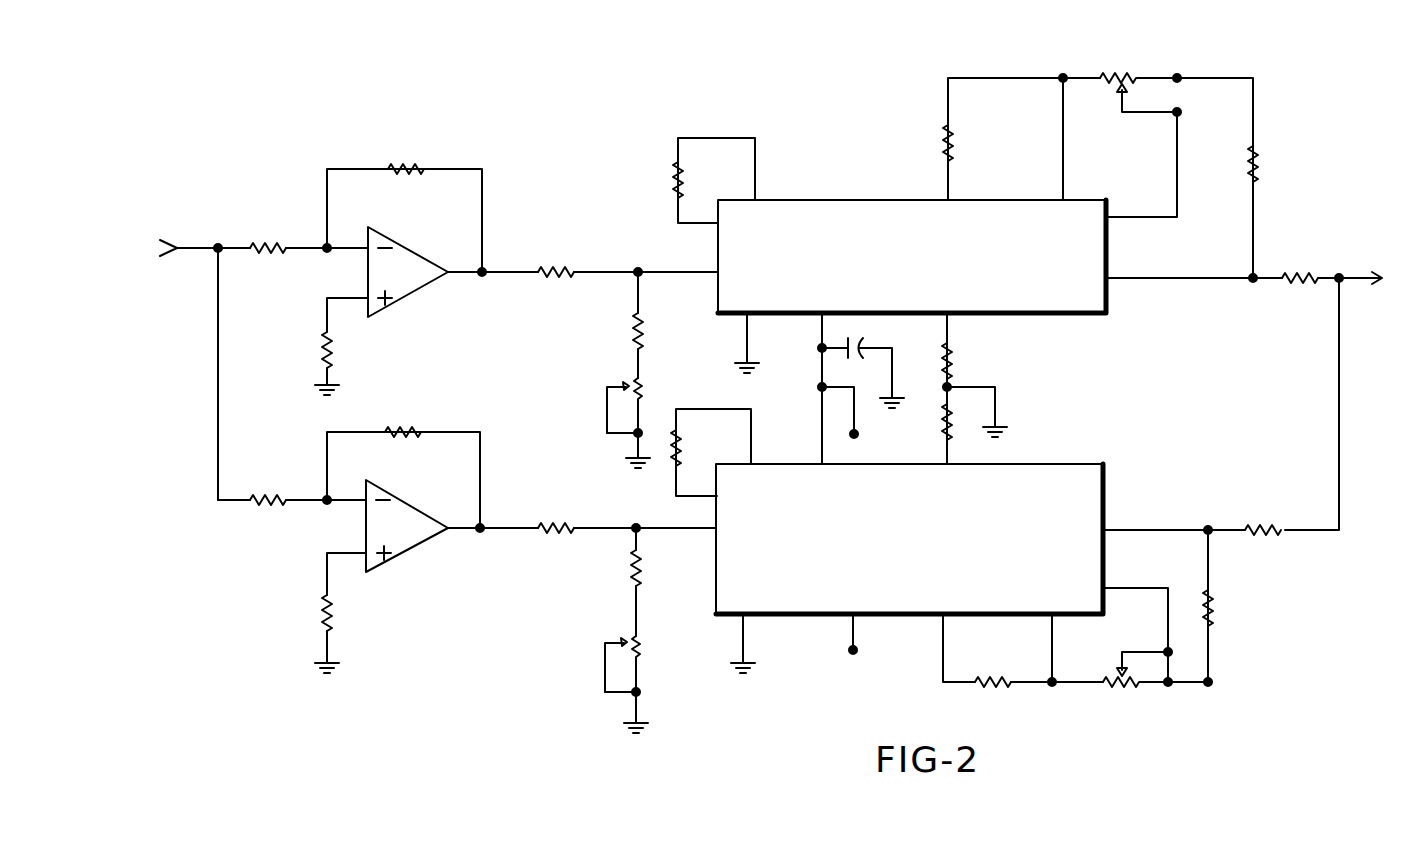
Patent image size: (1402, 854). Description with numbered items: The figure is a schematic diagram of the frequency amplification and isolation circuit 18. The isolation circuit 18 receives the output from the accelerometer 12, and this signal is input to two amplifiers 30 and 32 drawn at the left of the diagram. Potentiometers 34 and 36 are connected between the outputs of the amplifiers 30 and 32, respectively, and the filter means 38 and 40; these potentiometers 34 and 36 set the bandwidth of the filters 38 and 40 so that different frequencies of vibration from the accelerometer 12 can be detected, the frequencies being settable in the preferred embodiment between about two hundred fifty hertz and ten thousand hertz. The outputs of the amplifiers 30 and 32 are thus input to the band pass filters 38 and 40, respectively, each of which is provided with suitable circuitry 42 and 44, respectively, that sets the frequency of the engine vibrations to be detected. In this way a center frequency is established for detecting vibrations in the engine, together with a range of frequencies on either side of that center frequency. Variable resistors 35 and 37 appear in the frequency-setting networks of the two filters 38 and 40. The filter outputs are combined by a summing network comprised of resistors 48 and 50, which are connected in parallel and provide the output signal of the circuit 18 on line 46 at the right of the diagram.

The accelerometer 12 is at (186, 246).
The frequency amplification and isolation circuit 18 is at (740, 733).
The amplifier 30 is at (395, 262).
The amplifier 32 is at (403, 543).
The potentiometer 34 is at (607, 406).
The variable resistor of first filter 35 is at (1114, 78).
The potentiometer 36 is at (605, 666).
The variable resistor of second filter 37 is at (1119, 687).
The band pass filter 38 is at (843, 200).
The band pass filter 40 is at (1040, 478).
The circuitry 42 is at (1157, 168).
The circuitry 44 is at (1157, 624).
The output line 46 is at (1352, 276).
The resistor 48 is at (1282, 273).
The resistor 50 is at (1268, 540).